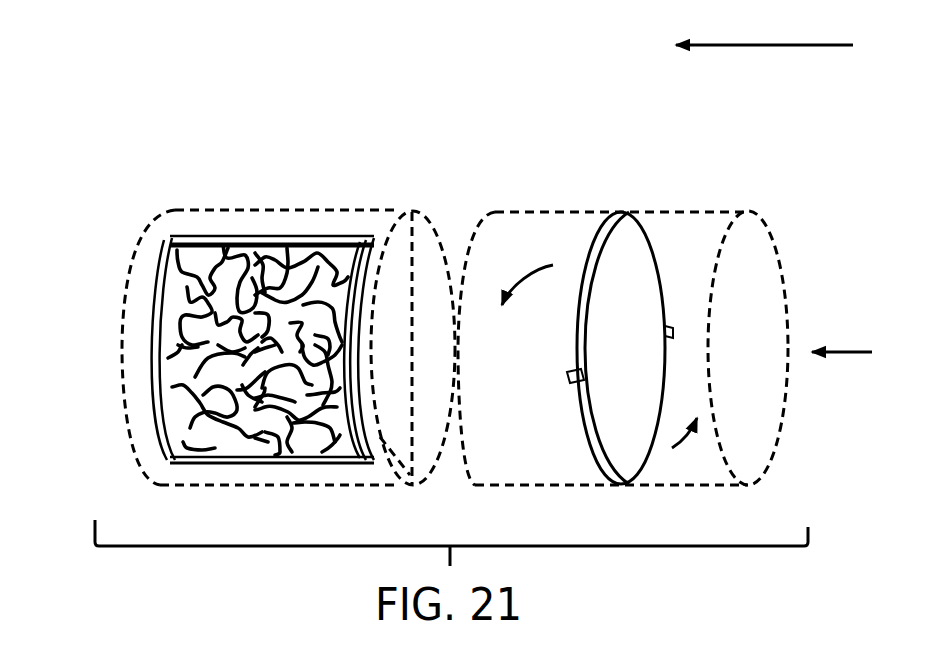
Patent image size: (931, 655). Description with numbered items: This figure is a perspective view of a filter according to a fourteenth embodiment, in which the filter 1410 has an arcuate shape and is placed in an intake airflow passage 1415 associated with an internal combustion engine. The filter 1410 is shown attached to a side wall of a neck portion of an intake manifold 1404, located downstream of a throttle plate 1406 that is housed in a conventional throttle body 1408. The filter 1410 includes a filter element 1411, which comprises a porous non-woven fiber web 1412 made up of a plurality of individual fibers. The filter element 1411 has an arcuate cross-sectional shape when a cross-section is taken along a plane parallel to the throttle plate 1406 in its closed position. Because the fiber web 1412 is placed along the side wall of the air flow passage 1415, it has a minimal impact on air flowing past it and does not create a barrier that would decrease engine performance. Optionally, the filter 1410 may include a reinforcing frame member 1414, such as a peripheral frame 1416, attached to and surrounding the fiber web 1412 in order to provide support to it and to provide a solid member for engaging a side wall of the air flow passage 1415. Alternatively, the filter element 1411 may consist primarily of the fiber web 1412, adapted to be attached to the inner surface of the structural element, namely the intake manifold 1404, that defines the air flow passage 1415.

The intake manifold 1404 is at (256, 172).
The throttle plate 1406 is at (622, 262).
The throttle body 1408 is at (555, 195).
The filter 1410 is at (140, 428).
The filter element 1411 is at (152, 274).
The porous non-woven fiber web 1412 is at (273, 437).
The reinforcing frame member 1414 is at (160, 318).
The intake airflow passage 1415 is at (424, 484).
The peripheral frame 1416 is at (316, 235).